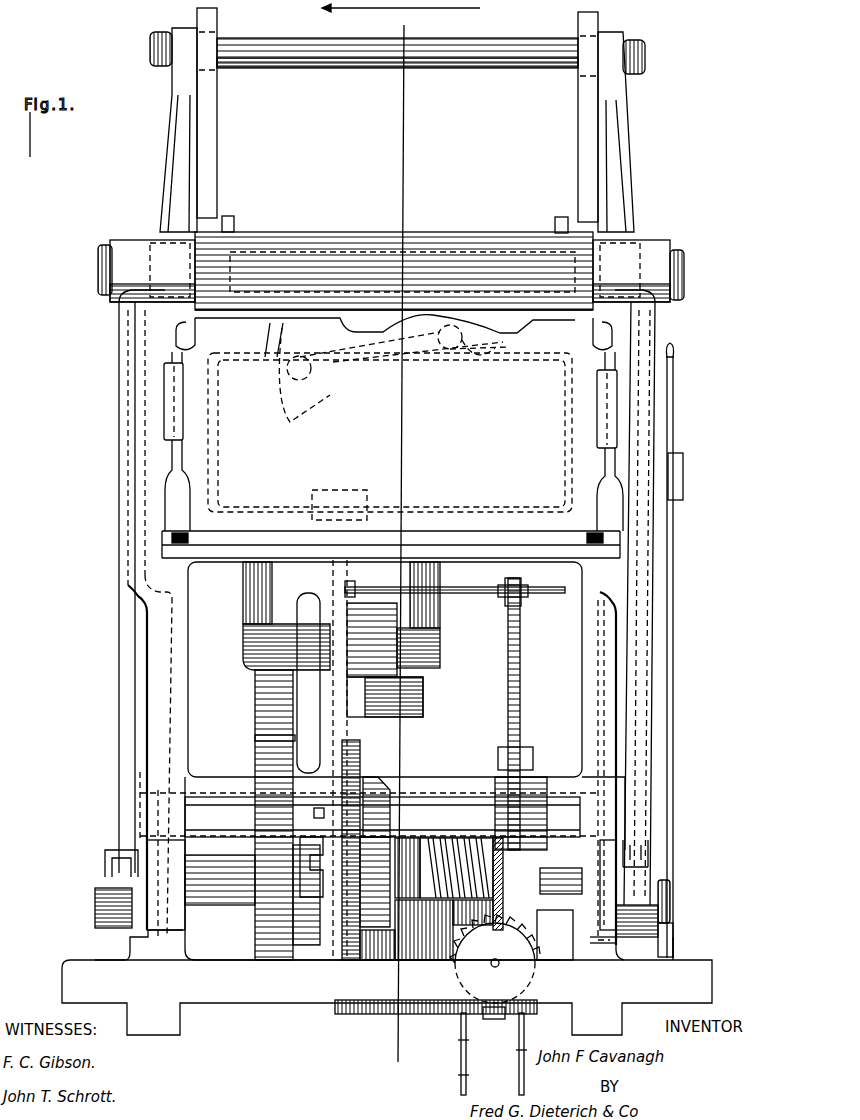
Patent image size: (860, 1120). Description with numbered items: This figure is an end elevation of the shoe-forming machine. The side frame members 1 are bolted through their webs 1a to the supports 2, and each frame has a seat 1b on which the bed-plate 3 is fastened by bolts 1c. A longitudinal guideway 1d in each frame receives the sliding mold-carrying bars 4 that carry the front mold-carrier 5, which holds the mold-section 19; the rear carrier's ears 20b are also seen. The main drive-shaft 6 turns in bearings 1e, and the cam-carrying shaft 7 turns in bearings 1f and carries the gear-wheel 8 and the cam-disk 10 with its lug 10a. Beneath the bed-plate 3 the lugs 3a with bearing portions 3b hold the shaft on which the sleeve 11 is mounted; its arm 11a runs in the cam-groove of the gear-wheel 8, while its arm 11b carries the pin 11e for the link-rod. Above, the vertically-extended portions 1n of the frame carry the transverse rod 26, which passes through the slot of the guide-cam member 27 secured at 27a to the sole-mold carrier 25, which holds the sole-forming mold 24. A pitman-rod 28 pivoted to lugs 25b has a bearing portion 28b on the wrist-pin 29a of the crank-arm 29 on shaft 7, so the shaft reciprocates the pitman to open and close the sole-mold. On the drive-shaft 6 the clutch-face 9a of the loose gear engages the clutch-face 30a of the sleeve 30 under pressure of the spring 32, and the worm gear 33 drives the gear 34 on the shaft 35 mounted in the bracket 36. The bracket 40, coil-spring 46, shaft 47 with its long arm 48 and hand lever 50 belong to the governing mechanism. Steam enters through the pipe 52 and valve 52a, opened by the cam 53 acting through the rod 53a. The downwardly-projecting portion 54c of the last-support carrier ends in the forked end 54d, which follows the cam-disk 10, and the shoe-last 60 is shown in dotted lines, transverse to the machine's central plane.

The side frame member 1 is at (180, 640).
The web 1a is at (160, 946).
The seat 1b is at (172, 569).
The bolt 1c is at (180, 538).
The longitudinal guideway 1d is at (162, 427).
The bearing 1e is at (560, 882).
The bearing 1f is at (198, 780).
The vertically-extended portion 1n is at (182, 90).
The support 2 is at (237, 987).
The bed-plate 3 is at (470, 548).
The lug 3a is at (268, 588).
The bearing portion 3b is at (430, 665).
The mold-carrying bar 4 is at (180, 402).
The front mold-carrier 5 is at (390, 436).
The main drive-shaft 6 is at (230, 873).
The cam-carrying shaft 7 is at (447, 803).
The gear-wheel 8 is at (273, 712).
The clutch-face 9a is at (306, 900).
The cam-disk 10 is at (357, 762).
The lug 10a is at (383, 810).
The sleeve 11 is at (372, 640).
The arm 11a is at (303, 693).
The arm 11b is at (423, 683).
The pin 11e is at (283, 740).
The mold-section 19 is at (375, 372).
The ear 20b is at (182, 330).
The sole-forming mold 24 is at (508, 306).
The sole-mold carrier 25 is at (430, 238).
The lug 25b is at (102, 250).
The transverse rod 26 is at (380, 66).
The guide-cam member 27 is at (208, 123).
The securing point 27a is at (230, 226).
The pitman-rod 28 is at (119, 640).
The bearing portion 28b is at (105, 915).
The crank-arm 29 is at (143, 817).
The wrist-pin 29a is at (95, 892).
The sleeve 30 is at (375, 882).
The clutch-face 30a is at (315, 879).
The spring 32 is at (473, 837).
The worm gear 33 is at (555, 935).
The gear 34 is at (495, 941).
The shaft 35 is at (495, 983).
The bracket 36 is at (523, 1020).
The bracket 40 is at (375, 1010).
The coil-spring 46 is at (466, 1070).
The shaft 47 is at (470, 920).
The long arm 48 is at (448, 952).
The lever 50 is at (662, 944).
The steam-inlet pipe 52 is at (469, 590).
The valve 52a is at (522, 598).
The cam 53 is at (523, 810).
The rod 53a is at (517, 714).
The downwardly-projecting portion 54c is at (343, 605).
The forked end 54d is at (335, 820).
The shoe-last 60 is at (450, 352).